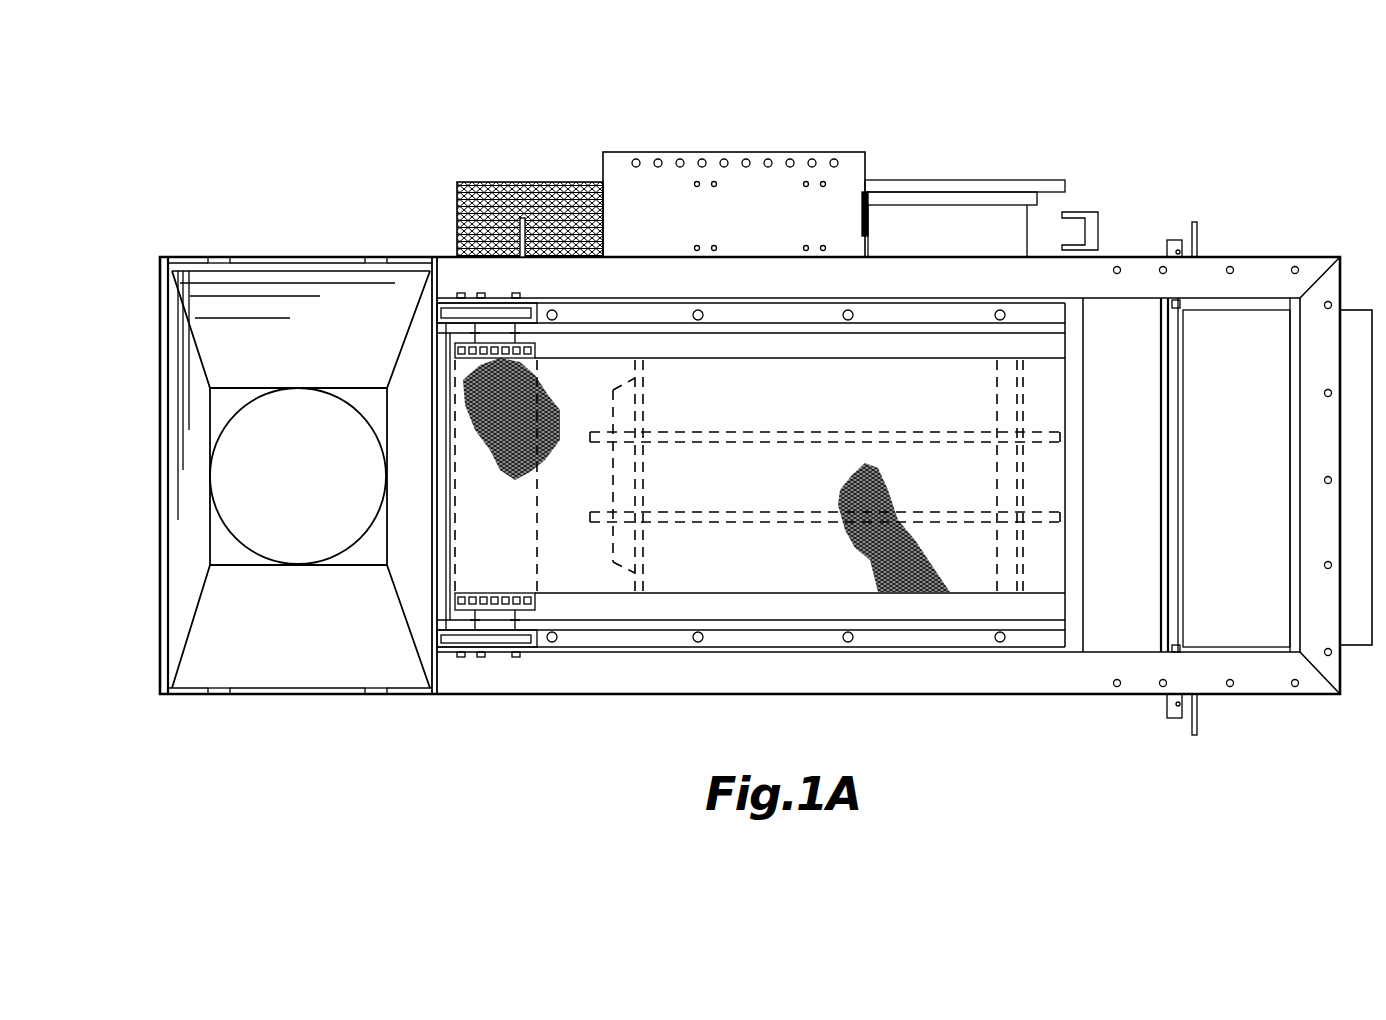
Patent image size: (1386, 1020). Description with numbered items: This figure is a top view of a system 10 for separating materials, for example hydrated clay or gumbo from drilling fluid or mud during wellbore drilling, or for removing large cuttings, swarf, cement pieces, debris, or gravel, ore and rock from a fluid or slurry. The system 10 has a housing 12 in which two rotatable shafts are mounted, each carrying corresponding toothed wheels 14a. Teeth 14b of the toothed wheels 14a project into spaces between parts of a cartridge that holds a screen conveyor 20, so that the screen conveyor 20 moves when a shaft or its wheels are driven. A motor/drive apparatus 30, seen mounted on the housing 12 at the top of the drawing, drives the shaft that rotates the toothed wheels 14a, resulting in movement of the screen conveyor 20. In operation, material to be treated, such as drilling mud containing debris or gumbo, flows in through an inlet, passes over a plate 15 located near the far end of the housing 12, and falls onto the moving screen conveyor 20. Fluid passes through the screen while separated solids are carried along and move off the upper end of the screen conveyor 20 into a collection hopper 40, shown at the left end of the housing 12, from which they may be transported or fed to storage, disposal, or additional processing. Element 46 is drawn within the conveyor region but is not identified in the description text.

The system 10 is at (374, 230).
The housing 12 is at (918, 700).
The toothed wheels 14a is at (530, 520).
The teeth 14b is at (512, 622).
The plate 15 is at (1123, 348).
The screen conveyor 20 is at (835, 405).
The motor/drive apparatus 30 is at (600, 180).
The collection hopper 40 is at (195, 437).
The guide member 46 is at (625, 405).